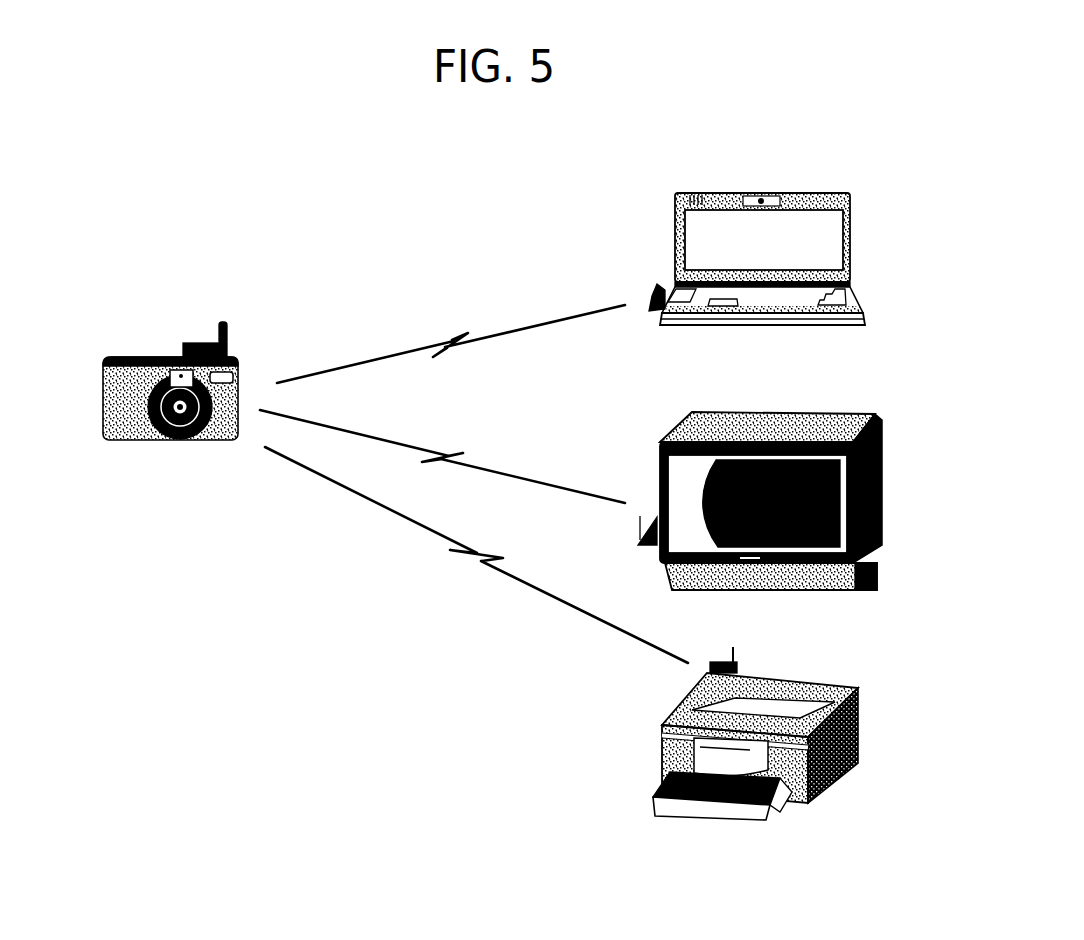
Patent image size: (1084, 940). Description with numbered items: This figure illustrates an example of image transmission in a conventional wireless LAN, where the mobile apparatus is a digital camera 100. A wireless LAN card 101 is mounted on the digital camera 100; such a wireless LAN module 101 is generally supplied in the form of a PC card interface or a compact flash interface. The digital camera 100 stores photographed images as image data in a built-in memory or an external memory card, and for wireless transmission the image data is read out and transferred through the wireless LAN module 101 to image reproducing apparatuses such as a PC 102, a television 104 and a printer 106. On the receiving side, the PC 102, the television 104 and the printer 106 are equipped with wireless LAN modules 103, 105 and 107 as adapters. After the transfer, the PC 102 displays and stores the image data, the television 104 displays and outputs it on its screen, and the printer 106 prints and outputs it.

The digital camera 100 is at (145, 389).
The wireless LAN card 101 is at (200, 343).
The PC 102 is at (763, 274).
The wireless LAN module 103 is at (653, 308).
The television 104 is at (762, 490).
The wireless LAN module 105 is at (640, 543).
The printer 106 is at (791, 721).
The wireless LAN module 107 is at (742, 667).